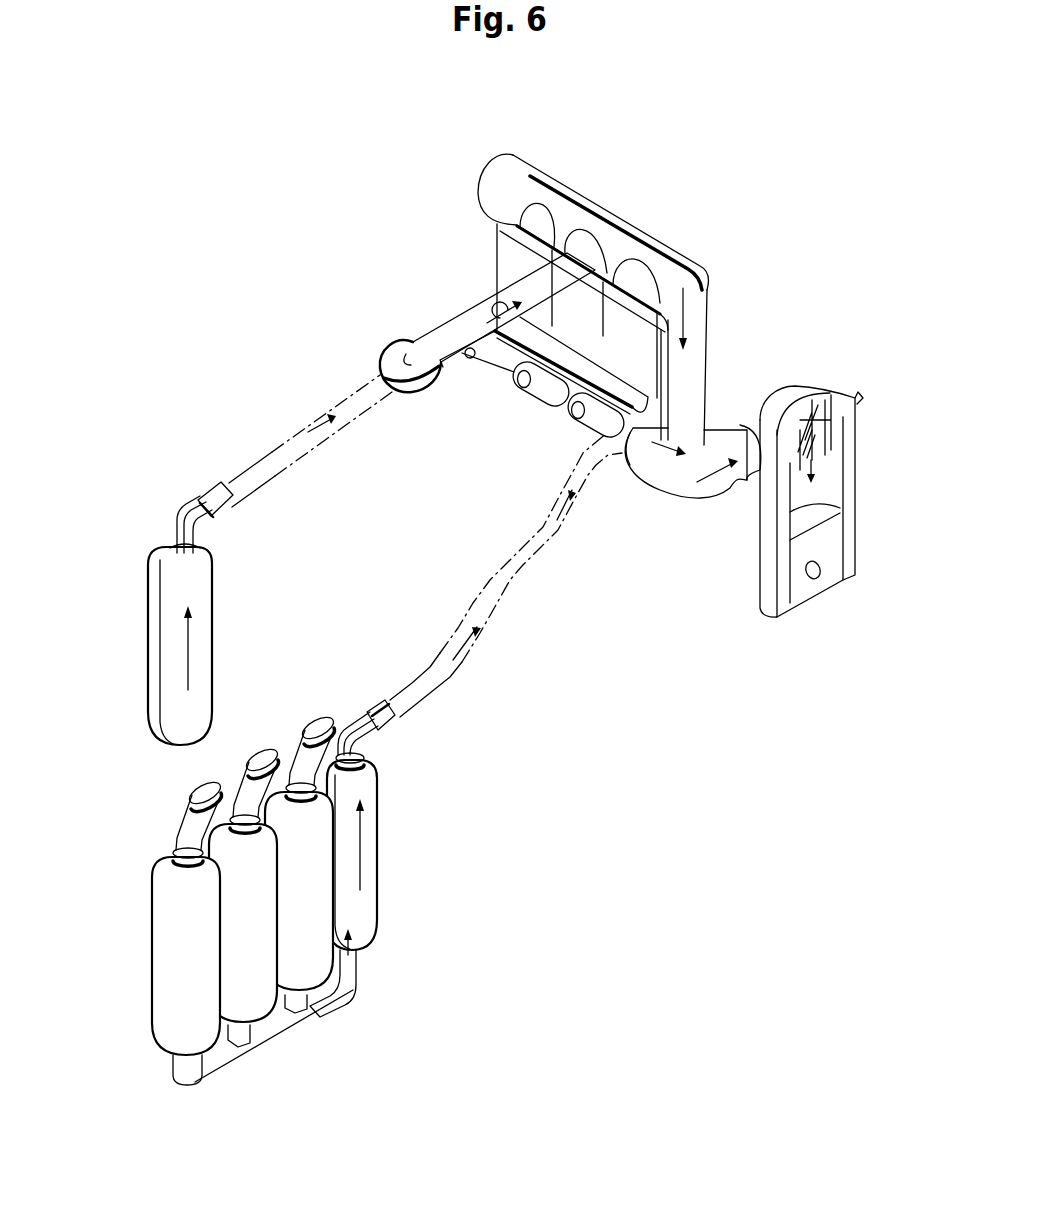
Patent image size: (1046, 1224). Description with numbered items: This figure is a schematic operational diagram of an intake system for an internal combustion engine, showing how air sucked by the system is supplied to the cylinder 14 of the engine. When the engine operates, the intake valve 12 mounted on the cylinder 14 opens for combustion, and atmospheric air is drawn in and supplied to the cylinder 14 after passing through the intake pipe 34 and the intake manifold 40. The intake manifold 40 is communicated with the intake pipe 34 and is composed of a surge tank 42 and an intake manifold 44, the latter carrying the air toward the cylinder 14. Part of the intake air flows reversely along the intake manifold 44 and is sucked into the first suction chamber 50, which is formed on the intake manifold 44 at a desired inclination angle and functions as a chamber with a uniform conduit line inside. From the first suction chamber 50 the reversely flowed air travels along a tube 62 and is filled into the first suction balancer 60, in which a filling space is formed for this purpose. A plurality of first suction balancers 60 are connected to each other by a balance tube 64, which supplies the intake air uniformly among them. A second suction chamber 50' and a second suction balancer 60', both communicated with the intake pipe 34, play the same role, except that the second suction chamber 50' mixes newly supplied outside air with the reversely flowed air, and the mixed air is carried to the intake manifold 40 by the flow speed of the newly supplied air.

The intake valve 12 is at (822, 418).
The cylinder 14 is at (835, 475).
The intake pipe 34 is at (462, 355).
The intake manifold 40 is at (792, 205).
The surge tank 42 is at (527, 172).
The intake manifold 44 is at (706, 329).
The first suction chamber 50 is at (693, 499).
The second suction chamber 50' is at (457, 322).
The first suction balancer 60 is at (393, 825).
The second suction balancer 60' is at (141, 613).
The tube 62 is at (293, 433).
The balance tube 64 is at (273, 1023).